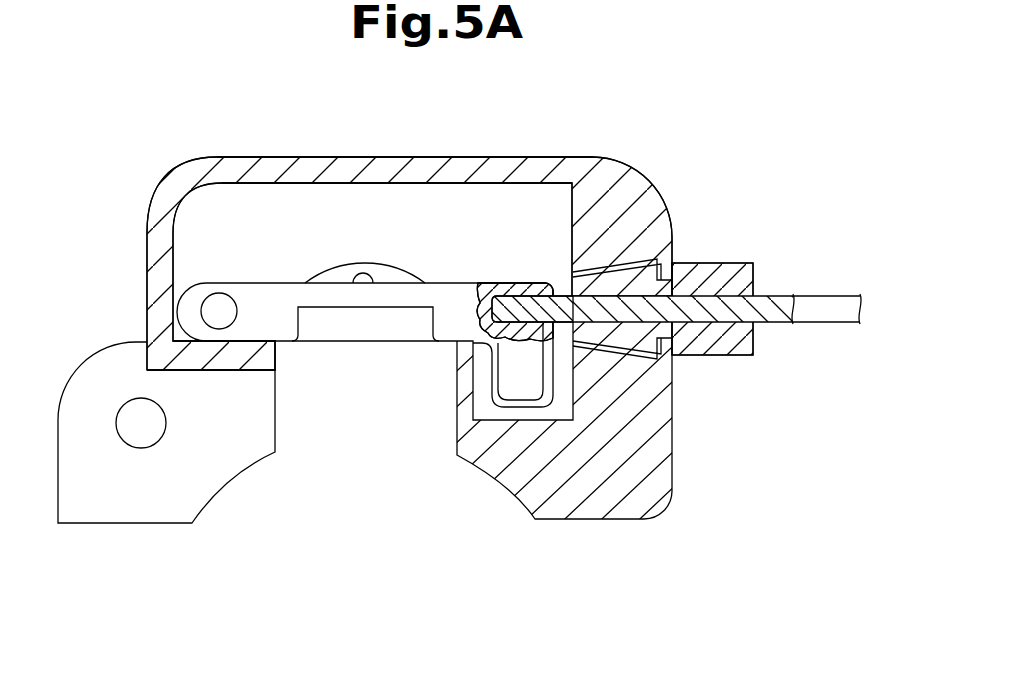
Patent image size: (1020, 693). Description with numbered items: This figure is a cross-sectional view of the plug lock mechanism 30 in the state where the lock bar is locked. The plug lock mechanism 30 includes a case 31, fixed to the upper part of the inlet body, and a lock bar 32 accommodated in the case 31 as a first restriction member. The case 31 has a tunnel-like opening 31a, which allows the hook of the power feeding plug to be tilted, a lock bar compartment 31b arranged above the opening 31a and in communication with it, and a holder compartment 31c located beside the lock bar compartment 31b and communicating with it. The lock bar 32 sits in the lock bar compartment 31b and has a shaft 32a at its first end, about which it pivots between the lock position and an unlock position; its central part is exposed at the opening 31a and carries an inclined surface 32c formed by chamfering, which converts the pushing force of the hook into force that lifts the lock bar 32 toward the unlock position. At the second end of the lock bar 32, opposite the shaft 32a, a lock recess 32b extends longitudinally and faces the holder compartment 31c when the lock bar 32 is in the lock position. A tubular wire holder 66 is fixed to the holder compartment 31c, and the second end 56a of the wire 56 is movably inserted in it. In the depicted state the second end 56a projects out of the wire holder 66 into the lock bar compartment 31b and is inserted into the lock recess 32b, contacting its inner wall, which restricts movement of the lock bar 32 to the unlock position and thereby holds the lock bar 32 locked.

The plug lock mechanism 30 is at (689, 168).
The case 31 is at (622, 158).
The opening 31a is at (274, 356).
The lock bar compartment 31b is at (308, 182).
The holder compartment 31c is at (632, 354).
The lock bar 32 is at (193, 282).
The shaft 32a is at (196, 308).
The lock recess 32b is at (512, 283).
The inclined surface 32c is at (335, 330).
The wire 56 is at (831, 296).
The second end 56a is at (492, 314).
The wire holder 66 is at (720, 262).